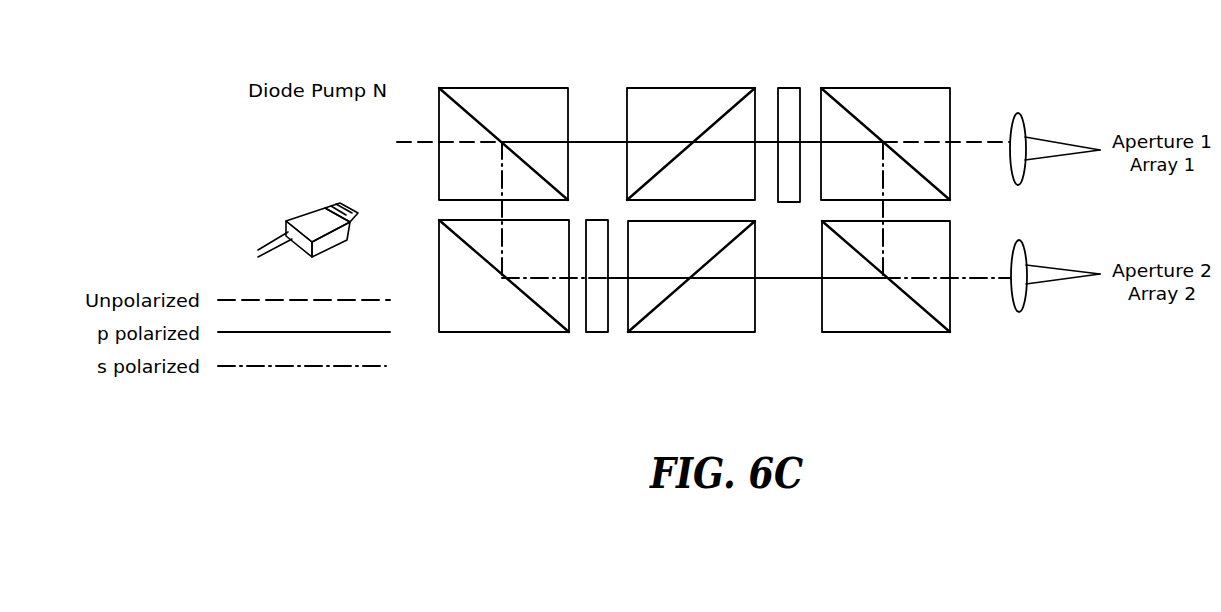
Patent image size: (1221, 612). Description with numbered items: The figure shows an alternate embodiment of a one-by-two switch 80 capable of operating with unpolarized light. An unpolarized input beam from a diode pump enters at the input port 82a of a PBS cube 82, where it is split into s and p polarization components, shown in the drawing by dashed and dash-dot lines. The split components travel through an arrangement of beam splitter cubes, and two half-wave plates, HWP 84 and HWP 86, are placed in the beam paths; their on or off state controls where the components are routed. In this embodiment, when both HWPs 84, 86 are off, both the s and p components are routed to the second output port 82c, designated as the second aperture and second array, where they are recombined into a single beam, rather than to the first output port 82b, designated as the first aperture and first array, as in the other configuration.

The 1×2 switch 80 is at (903, 52).
The PBS cube 82 is at (502, 88).
The input port 82a is at (413, 146).
The first output port 82b is at (1049, 126).
The second output port 82c is at (1050, 294).
The HWP 84 is at (606, 334).
The HWP 86 is at (788, 88).